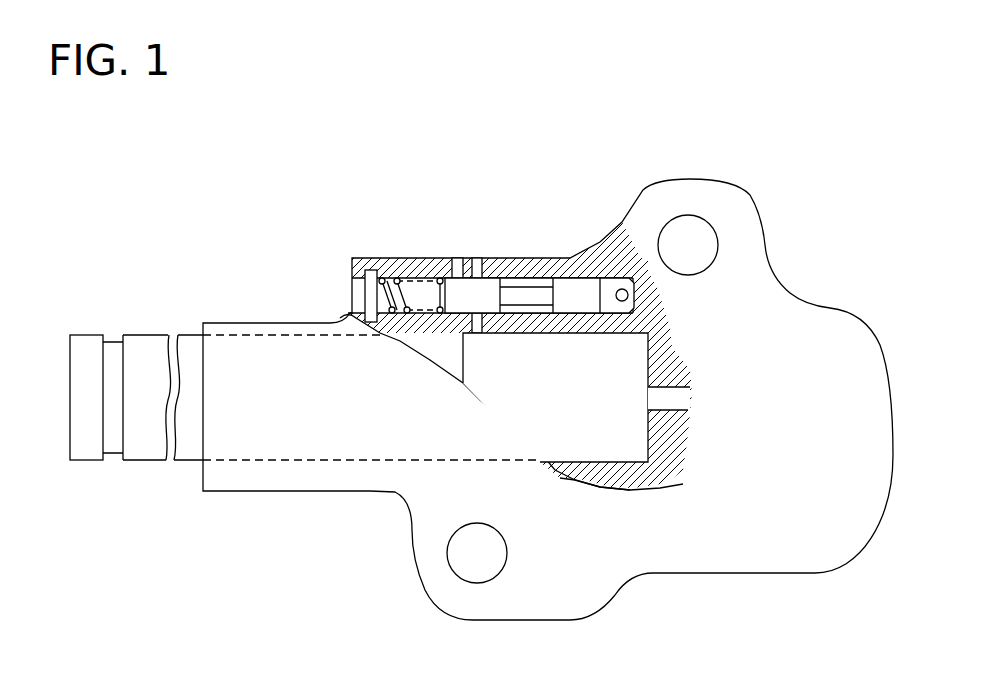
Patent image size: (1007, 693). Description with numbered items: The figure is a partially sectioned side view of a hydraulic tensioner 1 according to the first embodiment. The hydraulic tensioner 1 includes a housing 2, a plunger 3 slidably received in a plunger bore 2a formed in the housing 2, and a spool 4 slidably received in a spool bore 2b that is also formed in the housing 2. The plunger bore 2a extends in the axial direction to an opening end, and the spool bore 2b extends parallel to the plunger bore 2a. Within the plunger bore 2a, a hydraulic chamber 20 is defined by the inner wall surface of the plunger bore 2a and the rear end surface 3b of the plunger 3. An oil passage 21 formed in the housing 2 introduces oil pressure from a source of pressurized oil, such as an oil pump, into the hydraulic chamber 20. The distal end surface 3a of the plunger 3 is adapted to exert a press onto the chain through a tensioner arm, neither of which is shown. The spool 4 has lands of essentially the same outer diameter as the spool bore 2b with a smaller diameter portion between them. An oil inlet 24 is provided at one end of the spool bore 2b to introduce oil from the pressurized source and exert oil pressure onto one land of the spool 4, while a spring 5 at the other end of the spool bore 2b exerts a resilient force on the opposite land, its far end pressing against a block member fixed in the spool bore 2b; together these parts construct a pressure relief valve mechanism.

The hydraulic tensioner 1 is at (466, 425).
The housing 2 is at (548, 411).
The plunger bore 2a is at (275, 455).
The spool bore 2b is at (607, 281).
The plunger 3 is at (121, 408).
The distal end surface 3a is at (70, 445).
The rear end surface 3b is at (463, 364).
The spool 4 is at (589, 257).
The spring 5 is at (396, 272).
The hydraulic chamber 20 is at (597, 450).
The oil passage 21 is at (683, 404).
The oil inlet 24 is at (628, 295).